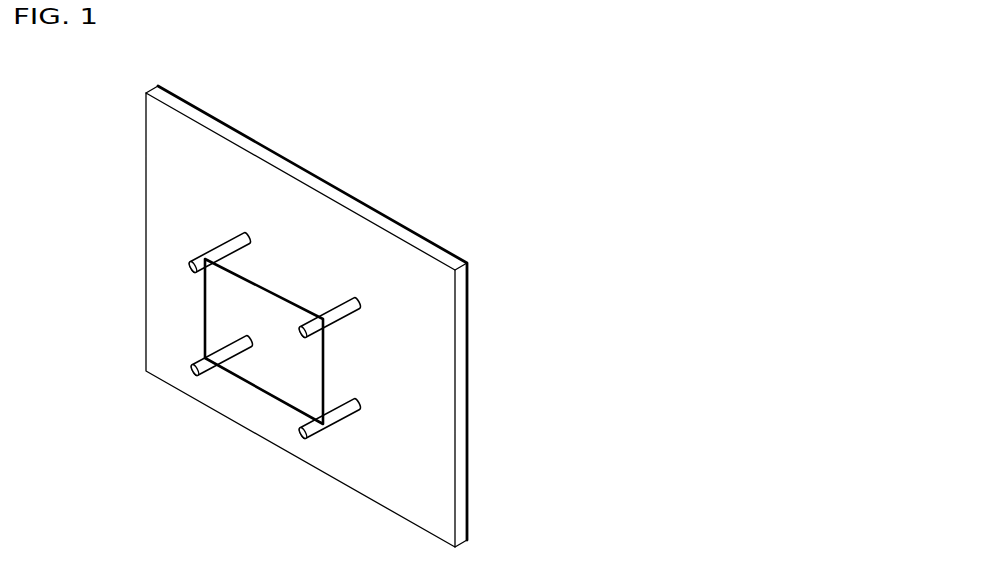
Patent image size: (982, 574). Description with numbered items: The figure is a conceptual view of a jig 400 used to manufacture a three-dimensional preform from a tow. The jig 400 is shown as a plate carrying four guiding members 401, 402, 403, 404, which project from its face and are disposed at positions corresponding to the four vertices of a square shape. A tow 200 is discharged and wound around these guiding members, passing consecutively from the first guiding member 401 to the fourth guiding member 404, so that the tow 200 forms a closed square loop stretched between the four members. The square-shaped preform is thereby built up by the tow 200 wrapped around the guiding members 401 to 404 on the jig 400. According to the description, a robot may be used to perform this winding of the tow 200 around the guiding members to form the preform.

The jig 400 is at (445, 372).
The tow 200 is at (260, 398).
The first guiding member 401 is at (353, 293).
The second guiding member 402 is at (243, 232).
The third guiding member 403 is at (312, 441).
The fourth guiding member 404 is at (193, 374).